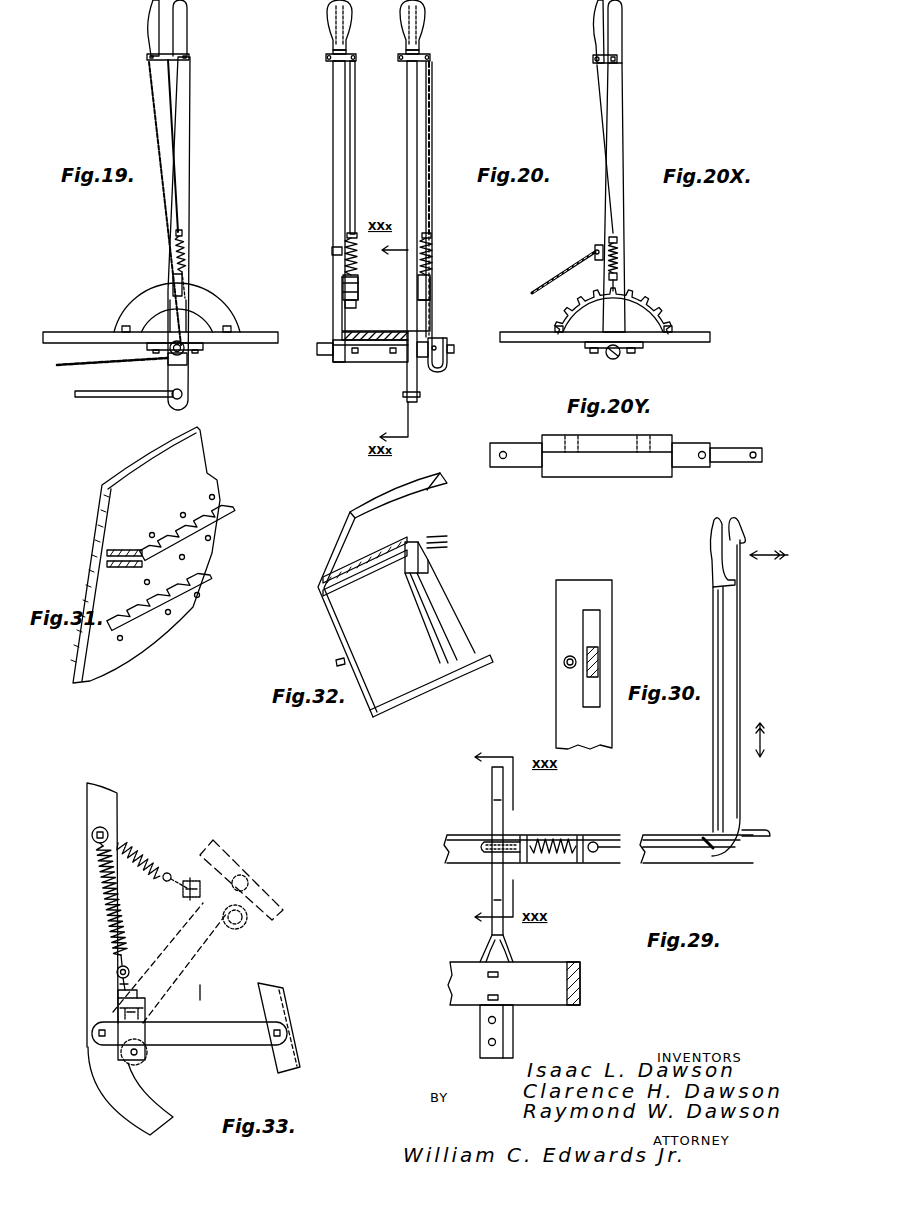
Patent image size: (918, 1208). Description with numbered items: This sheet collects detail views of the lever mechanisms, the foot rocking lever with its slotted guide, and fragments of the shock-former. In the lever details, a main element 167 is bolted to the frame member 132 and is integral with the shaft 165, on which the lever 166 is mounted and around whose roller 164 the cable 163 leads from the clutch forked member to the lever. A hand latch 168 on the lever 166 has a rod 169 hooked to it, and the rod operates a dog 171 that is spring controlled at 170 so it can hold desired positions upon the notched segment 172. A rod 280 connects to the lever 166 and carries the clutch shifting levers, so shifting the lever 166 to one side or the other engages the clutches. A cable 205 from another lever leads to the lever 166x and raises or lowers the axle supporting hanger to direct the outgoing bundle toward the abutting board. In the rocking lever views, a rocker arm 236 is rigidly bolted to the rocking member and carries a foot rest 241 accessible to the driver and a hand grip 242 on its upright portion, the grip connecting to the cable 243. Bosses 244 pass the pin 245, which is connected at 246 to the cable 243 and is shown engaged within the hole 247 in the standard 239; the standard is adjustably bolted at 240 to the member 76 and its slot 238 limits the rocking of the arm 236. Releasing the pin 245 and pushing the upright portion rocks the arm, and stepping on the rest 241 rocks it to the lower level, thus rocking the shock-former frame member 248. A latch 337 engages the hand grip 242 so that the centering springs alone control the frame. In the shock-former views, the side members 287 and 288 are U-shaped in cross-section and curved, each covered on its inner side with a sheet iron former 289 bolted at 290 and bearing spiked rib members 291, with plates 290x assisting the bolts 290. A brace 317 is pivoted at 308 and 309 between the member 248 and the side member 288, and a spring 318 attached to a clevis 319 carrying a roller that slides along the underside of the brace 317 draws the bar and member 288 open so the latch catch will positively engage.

In FIG. 19, the hand latch 168 is at (150, 20).
In FIG. 20, the hand latch 168 is at (421, 33).
In FIG. 19, the lever 166 is at (190, 90).
In FIG. 20, the lever 166 is at (412, 149).
In FIG. 20, the lever 166x is at (337, 100).
In FIG. 20X, the lever 166x is at (617, 108).
In FIG. 19, the cable 163 is at (155, 95).
In FIG. 20, the cable 163 is at (440, 322).
In FIG. 19, the rod 169 is at (180, 182).
In FIG. 20, the rod 169 is at (433, 205).
In FIG. 19, the spring 170 is at (184, 253).
In FIG. 20, the spring 170 is at (433, 262).
In FIG. 19, the dog 171 is at (188, 282).
In FIG. 19, the notched segment 172 is at (203, 300).
In FIG. 20, the notched segment 172 is at (425, 307).
In FIG. 19, the frame member 132 is at (258, 335).
In FIG. 20, the frame member 132 is at (382, 330).
In FIG. 20X, the frame member 132 is at (688, 335).
In FIG. 19, the roller 164 is at (184, 354).
In FIG. 20, the roller 164 is at (440, 343).
In FIG. 20, the shaft 165 is at (455, 351).
In FIG. 20Y, the shaft 165 is at (732, 448).
In FIG. 20, the main element 167 is at (377, 362).
In FIG. 20Y, the main element 167 is at (594, 470).
In FIG. 20, the cable 205 is at (353, 130).
In FIG. 20X, the cable 205 is at (578, 258).
In FIG. 19, the rod 280 is at (117, 397).
In FIG. 31, the sheet iron former 289 is at (145, 555).
In FIG. 32, the sheet iron former 289 is at (405, 595).
In FIG. 31, the spiked rib members 291 is at (223, 503).
In FIG. 32, the spiked rib members 291 is at (318, 588).
In FIG. 31, the side member 287 is at (127, 543).
In FIG. 32, the side member 288 is at (440, 535).
In FIG. 33, the side member 288 is at (302, 1063).
In FIG. 32, the bolts 290 is at (430, 557).
In FIG. 32, the plates 290x is at (423, 605).
In FIG. 30, the standard 239 is at (508, 957).
In FIG. 30, the slot 238 is at (596, 632).
In FIG. 30, the rocker arm 236 is at (598, 662).
In FIG. 29, the rocker arm 236 is at (737, 683).
In FIG. 30, the hole 247 is at (563, 660).
In FIG. 30, the pin 245 is at (565, 668).
In FIG. 30, the bosses 244 is at (527, 837).
In FIG. 30, the connection 246 is at (590, 840).
In FIG. 30, the cable 243 is at (607, 857).
In FIG. 29, the cable 243 is at (673, 850).
In FIG. 30, the member 76 is at (523, 975).
In FIG. 30, the bolt 240 is at (490, 998).
In FIG. 29, the hand grip 242 is at (706, 545).
In FIG. 29, the latch 337 is at (742, 535).
In FIG. 29, the foot rest 241 is at (763, 830).
In FIG. 33, the frame member 248 is at (133, 1100).
In FIG. 33, the brace 317 is at (204, 1030).
In FIG. 33, the clevis 319 is at (145, 1023).
In FIG. 33, the spring 318 is at (120, 930).
In FIG. 33, the pivot 309 is at (95, 1040).
In FIG. 33, the pivot 308 is at (287, 1033).